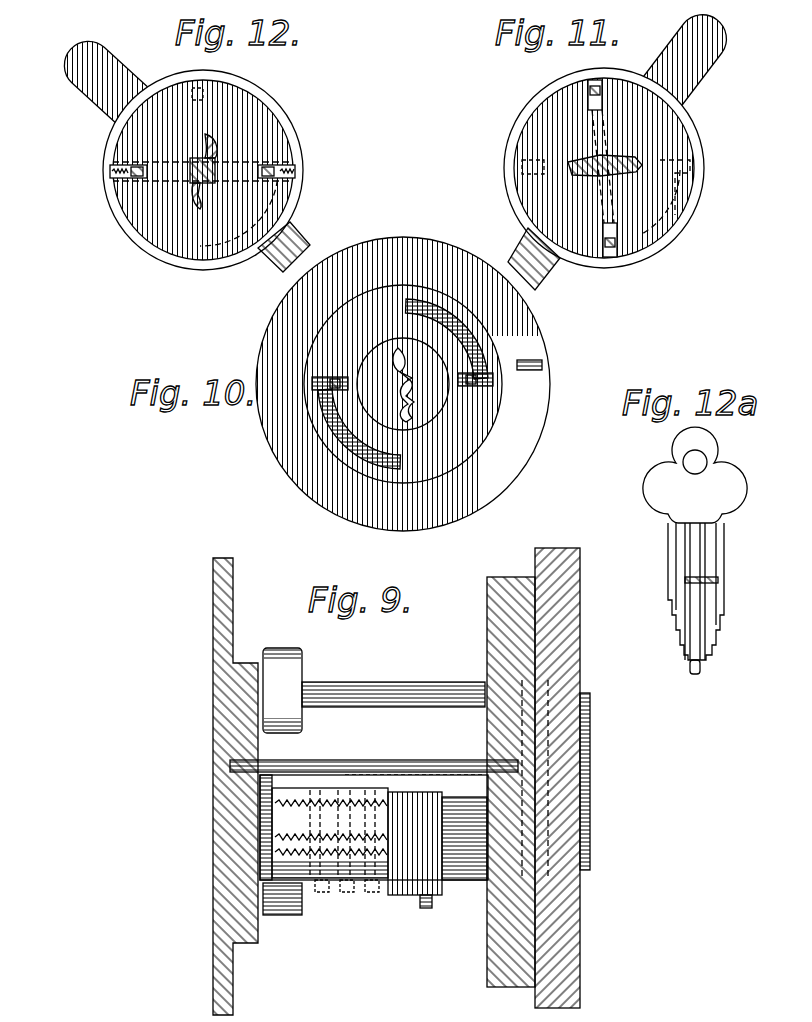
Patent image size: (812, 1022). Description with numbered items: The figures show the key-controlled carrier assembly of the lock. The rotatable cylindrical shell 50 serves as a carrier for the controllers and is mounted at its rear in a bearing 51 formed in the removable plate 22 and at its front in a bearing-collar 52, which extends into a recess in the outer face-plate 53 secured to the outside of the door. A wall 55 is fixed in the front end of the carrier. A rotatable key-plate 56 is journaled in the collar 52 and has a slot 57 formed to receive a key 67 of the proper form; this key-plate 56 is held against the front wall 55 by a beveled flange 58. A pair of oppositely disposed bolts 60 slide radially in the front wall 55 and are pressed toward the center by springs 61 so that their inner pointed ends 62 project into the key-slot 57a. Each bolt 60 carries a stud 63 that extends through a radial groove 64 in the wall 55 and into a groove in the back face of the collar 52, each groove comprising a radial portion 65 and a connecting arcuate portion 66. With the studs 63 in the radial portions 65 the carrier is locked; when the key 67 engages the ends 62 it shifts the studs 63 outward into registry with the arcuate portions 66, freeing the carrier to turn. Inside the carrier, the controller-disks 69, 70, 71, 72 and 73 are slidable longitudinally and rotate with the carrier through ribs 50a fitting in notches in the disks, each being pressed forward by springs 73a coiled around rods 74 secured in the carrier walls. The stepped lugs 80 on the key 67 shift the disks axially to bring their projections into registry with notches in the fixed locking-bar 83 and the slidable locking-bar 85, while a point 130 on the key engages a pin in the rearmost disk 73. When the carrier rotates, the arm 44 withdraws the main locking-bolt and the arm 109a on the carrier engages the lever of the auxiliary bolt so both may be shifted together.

In FIG. 9, the removable plate 22 is at (213, 798).
In FIG. 12, the arm 44 is at (72, 62).
In FIG. 11, the arm 44 is at (708, 62).
In FIG. 9, the arm 44 is at (302, 674).
In FIG. 12, the rotatable cylindrical shell 50 is at (296, 138).
In FIG. 11, the rotatable cylindrical shell 50 is at (705, 182).
In FIG. 9, the rotatable cylindrical shell 50 is at (393, 710).
In FIG. 9, the ribs 50a is at (336, 872).
In FIG. 9, the bearing 51 is at (245, 882).
In FIG. 10, the bearing-collar 52 is at (350, 484).
In FIG. 9, the outer face-plate 53 is at (578, 912).
In FIG. 12, the front wall 55 is at (235, 167).
In FIG. 11, the front wall 55 is at (606, 178).
In FIG. 10, the key-plate 56 is at (440, 400).
In FIG. 9, the key-plate 56 is at (592, 776).
In FIG. 10, the slot 57 is at (416, 402).
In FIG. 12, the key-slot 57a is at (204, 146).
In FIG. 9, the beveled flange 58 is at (576, 680).
In FIG. 12, the bolts 60 is at (130, 220).
In FIG. 11, the bolts 60 is at (600, 104).
In FIG. 12, the springs 61 is at (112, 171).
In FIG. 11, the springs 61 is at (590, 82).
In FIG. 12, the inner pointed ends 62 is at (194, 188).
In FIG. 12, the stud 63 is at (272, 168).
In FIG. 11, the stud 63 is at (606, 256).
In FIG. 12, the radial groove 64 is at (282, 180).
In FIG. 11, the radial groove 64 is at (620, 232).
In FIG. 10, the radial portion 65 is at (488, 379).
In FIG. 10, the arcuate portion 66 is at (478, 347).
In FIG. 11, the key 67 is at (618, 178).
In FIG. 12A, the key 67 is at (640, 490).
In FIG. 9, the controller-disk 69 is at (440, 896).
In FIG. 9, the controller-disk 70 is at (428, 910).
In FIG. 9, the controller-disk 71 is at (418, 906).
In FIG. 9, the controller-disk 72 is at (405, 896).
In FIG. 9, the rearmost disk 73 is at (386, 894).
In FIG. 9, the springs 73a is at (302, 800).
In FIG. 9, the rods 74 is at (355, 800).
In FIG. 12A, the stepped lugs 80 is at (722, 614).
In FIG. 9, the fixed locking-bar 83 is at (420, 764).
In FIG. 9, the slidable locking-bar 85 is at (438, 786).
In FIG. 12, the arm 109a is at (308, 240).
In FIG. 11, the arm 109a is at (516, 246).
In FIG. 9, the arm 109a is at (278, 916).
In FIG. 12A, the point 130 is at (700, 670).